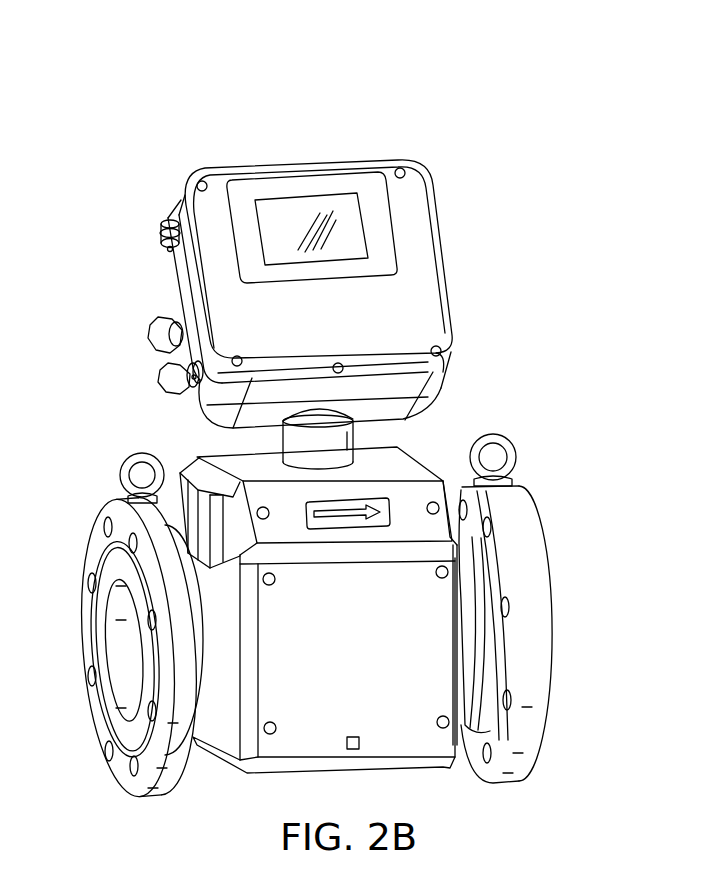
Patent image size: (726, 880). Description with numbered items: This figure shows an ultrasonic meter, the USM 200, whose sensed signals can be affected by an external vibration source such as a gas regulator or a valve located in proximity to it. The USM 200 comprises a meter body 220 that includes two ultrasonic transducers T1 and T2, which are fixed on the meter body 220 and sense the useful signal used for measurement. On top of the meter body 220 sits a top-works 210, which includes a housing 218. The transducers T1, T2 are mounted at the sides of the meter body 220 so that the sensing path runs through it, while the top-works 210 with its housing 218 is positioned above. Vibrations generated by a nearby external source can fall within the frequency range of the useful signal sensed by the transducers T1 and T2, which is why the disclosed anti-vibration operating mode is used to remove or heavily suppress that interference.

The USM 200 is at (345, 106).
The top-works 210 is at (487, 247).
The housing 218 is at (453, 187).
The meter body 220 is at (224, 777).
The transducer T1 is at (212, 659).
The transducer T2 is at (475, 649).